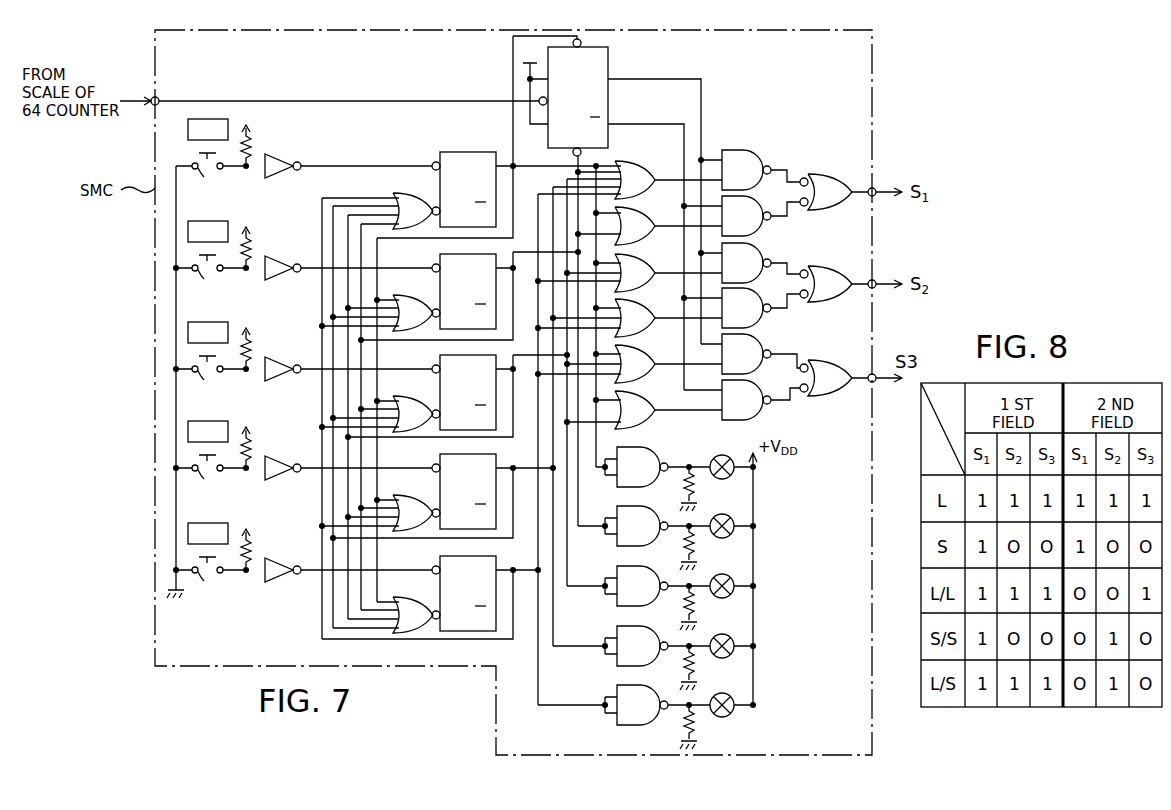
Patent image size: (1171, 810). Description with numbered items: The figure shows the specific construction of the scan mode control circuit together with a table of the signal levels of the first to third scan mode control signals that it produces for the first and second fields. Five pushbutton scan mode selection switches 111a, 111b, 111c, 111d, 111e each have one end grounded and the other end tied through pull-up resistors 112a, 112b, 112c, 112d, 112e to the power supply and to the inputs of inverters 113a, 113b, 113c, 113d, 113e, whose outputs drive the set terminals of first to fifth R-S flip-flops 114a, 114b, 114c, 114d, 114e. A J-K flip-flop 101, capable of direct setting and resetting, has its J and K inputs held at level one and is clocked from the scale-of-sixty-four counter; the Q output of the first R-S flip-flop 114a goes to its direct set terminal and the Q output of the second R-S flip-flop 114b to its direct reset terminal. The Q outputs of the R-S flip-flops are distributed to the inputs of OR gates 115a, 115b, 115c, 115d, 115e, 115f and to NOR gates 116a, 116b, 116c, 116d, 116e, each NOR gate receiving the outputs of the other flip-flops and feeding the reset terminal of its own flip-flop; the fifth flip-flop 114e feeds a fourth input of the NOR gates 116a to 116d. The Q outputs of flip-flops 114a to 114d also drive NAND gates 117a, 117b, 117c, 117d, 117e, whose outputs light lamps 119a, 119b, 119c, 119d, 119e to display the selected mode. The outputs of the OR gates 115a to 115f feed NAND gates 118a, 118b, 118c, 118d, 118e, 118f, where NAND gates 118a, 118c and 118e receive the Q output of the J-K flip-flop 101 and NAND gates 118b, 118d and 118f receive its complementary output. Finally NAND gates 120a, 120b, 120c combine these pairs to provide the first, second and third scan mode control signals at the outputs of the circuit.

The J-K flip-flop 101 is at (608, 62).
The scan mode selection switch 111a is at (209, 156).
The scan mode selection switch 111b is at (209, 258).
The scan mode selection switch 111c is at (209, 359).
The scan mode selection switch 111d is at (209, 458).
The scan mode selection switch 111e is at (209, 560).
The pull-up resistor 112a is at (252, 143).
The pull-up resistor 112b is at (252, 245).
The pull-up resistor 112c is at (252, 346).
The pull-up resistor 112d is at (252, 445).
The pull-up resistor 112e is at (252, 547).
The inverter 113a is at (283, 172).
The inverter 113b is at (283, 274).
The inverter 113c is at (283, 375).
The inverter 113d is at (283, 474).
The inverter 113e is at (283, 576).
The first R-S flip-flop 114a is at (470, 147).
The second R-S flip-flop 114b is at (434, 266).
The third R-S flip-flop 114c is at (434, 367).
The fourth R-S flip-flop 114d is at (434, 466).
The fifth R-S flip-flop 114e is at (434, 568).
The OR gate 115a is at (642, 165).
The OR gate 115b is at (645, 218).
The OR gate 115c is at (645, 265).
The OR gate 115d is at (645, 310).
The OR gate 115e is at (645, 356).
The OR gate 115f is at (645, 402).
The NOR gate 116a is at (407, 201).
The NOR gate 116b is at (416, 295).
The NOR gate 116c is at (416, 396).
The NOR gate 116d is at (416, 495).
The NOR gate 116e is at (416, 597).
The NAND gate for driving a lamp 117a is at (662, 450).
The NAND gate for driving a lamp 117b is at (660, 509).
The NAND gate for driving a lamp 117c is at (628, 568).
The NAND gate for driving a lamp 117d is at (618, 628).
The NAND gate for driving a lamp 117e is at (603, 691).
The NAND gate 118a is at (750, 152).
The NAND gate 118b is at (755, 206).
The NAND gate 118c is at (755, 255).
The NAND gate 118d is at (755, 301).
The NAND gate 118e is at (755, 345).
The NAND gate 118f is at (755, 393).
The lamp 119a is at (718, 457).
The lamp 119b is at (724, 516).
The lamp 119c is at (733, 580).
The lamp 119d is at (733, 640).
The lamp 119e is at (733, 699).
The NAND gate 120a is at (831, 173).
The NAND gate 120b is at (836, 258).
The NAND gate 120c is at (836, 351).